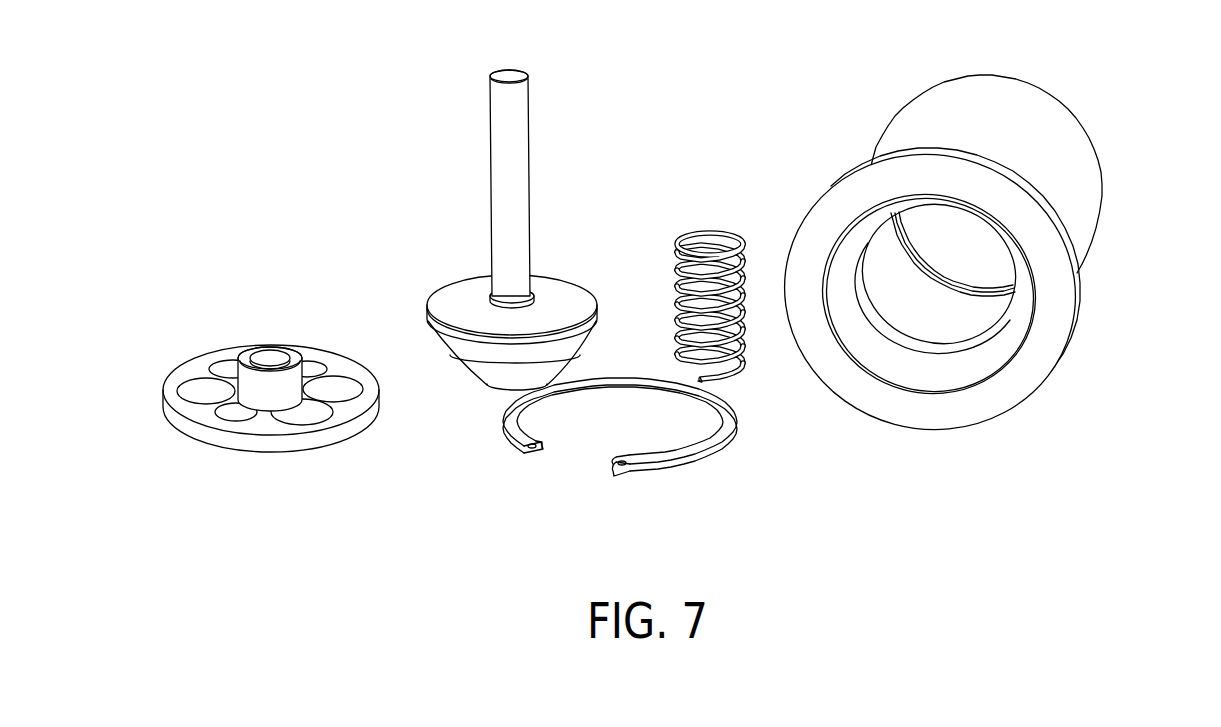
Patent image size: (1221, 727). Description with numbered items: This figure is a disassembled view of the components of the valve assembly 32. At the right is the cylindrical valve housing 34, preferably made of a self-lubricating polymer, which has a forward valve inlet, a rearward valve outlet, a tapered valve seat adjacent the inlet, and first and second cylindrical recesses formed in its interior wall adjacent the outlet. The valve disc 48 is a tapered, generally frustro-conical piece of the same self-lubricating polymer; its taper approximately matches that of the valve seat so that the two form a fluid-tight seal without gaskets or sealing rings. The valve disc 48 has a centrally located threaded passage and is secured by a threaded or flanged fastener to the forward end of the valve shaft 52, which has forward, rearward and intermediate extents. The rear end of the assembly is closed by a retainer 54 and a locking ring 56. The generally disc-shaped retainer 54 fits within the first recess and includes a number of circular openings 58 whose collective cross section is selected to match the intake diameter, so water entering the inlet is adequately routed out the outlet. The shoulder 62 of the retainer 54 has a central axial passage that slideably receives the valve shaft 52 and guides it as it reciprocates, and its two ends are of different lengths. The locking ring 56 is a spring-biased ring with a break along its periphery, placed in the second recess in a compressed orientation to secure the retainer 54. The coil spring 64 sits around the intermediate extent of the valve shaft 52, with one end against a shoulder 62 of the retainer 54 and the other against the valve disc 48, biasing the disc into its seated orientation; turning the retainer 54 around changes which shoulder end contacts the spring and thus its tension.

The valve assembly 32 is at (750, 108).
The cylindrical valve housing 34 is at (1067, 175).
The valve disc 48 is at (568, 307).
The valve shaft 52 is at (520, 153).
The retainer 54 is at (271, 392).
The locking ring 56 is at (700, 467).
The circular openings 58 is at (208, 389).
The shoulder 62 is at (283, 360).
The coil spring 64 is at (715, 255).